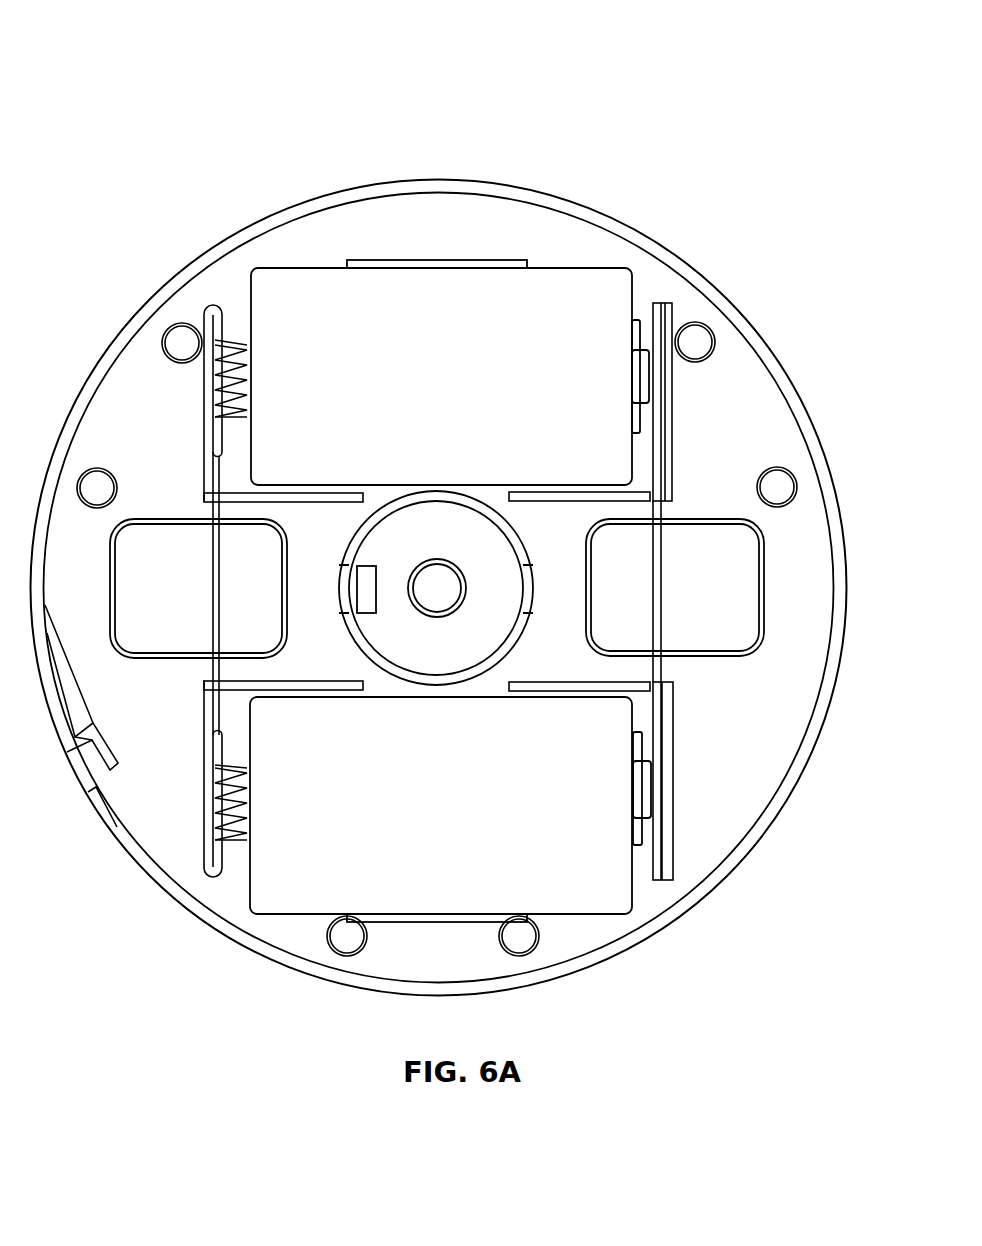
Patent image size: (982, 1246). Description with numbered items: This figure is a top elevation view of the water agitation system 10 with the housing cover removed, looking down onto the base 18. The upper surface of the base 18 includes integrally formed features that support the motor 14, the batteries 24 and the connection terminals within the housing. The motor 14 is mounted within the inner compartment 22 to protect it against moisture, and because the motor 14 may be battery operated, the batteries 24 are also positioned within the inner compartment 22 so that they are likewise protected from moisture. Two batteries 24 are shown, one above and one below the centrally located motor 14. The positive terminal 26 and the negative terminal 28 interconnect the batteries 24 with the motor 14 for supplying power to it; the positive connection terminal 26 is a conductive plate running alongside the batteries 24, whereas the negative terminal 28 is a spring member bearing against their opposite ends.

The water agitation system 10 is at (108, 100).
The motor 14 is at (430, 588).
The base 18 is at (845, 605).
The inner compartment 22 is at (135, 572).
The batteries 24 is at (562, 287).
The positive connection terminal 26 is at (667, 313).
The negative terminal 28 is at (245, 332).